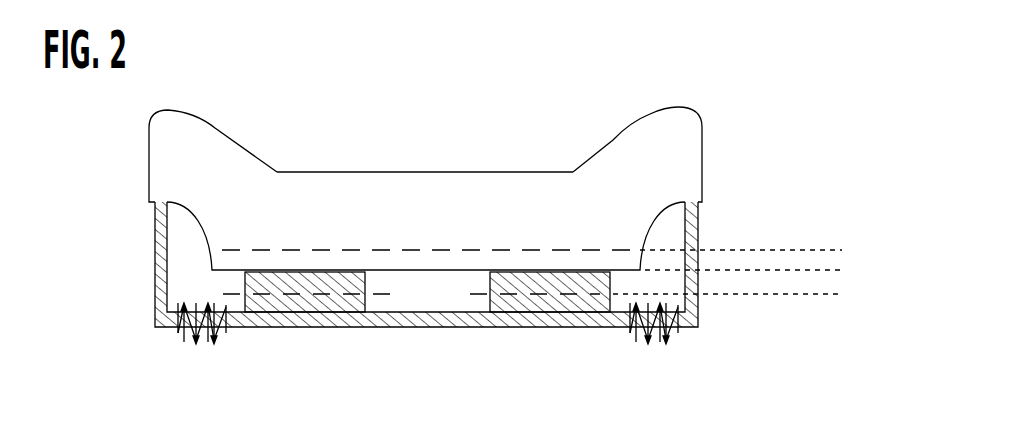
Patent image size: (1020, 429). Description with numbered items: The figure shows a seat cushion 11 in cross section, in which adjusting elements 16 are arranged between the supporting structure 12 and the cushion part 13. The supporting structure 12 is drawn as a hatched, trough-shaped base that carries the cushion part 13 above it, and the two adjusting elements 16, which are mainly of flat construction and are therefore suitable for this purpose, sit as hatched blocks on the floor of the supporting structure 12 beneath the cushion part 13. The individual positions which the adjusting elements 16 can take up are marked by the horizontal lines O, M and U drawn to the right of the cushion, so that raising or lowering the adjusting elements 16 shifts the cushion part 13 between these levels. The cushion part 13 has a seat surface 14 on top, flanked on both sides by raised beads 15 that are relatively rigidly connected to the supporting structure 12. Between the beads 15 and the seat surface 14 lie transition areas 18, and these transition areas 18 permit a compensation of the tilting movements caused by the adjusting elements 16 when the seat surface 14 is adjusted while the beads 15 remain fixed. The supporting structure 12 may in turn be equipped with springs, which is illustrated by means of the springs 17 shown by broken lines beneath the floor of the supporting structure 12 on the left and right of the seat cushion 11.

The seat cushion 11 is at (466, 122).
The supporting structure 12 is at (160, 268).
The cushion part 13 is at (675, 138).
The seat surface 14 is at (511, 172).
The beads 15 is at (200, 148).
The adjusting elements 16 is at (326, 300).
The springs 17 is at (187, 346).
The transition areas 18 is at (268, 202).
The position O is at (842, 248).
The position M is at (845, 268).
The position U is at (840, 293).